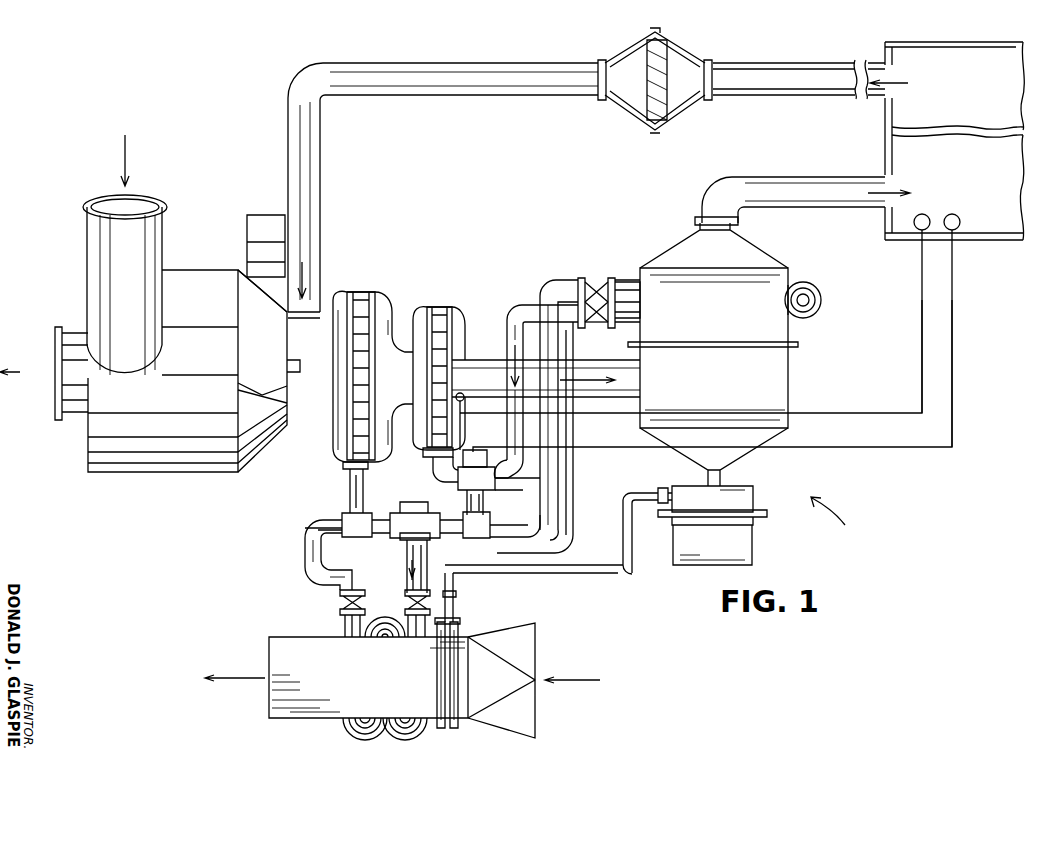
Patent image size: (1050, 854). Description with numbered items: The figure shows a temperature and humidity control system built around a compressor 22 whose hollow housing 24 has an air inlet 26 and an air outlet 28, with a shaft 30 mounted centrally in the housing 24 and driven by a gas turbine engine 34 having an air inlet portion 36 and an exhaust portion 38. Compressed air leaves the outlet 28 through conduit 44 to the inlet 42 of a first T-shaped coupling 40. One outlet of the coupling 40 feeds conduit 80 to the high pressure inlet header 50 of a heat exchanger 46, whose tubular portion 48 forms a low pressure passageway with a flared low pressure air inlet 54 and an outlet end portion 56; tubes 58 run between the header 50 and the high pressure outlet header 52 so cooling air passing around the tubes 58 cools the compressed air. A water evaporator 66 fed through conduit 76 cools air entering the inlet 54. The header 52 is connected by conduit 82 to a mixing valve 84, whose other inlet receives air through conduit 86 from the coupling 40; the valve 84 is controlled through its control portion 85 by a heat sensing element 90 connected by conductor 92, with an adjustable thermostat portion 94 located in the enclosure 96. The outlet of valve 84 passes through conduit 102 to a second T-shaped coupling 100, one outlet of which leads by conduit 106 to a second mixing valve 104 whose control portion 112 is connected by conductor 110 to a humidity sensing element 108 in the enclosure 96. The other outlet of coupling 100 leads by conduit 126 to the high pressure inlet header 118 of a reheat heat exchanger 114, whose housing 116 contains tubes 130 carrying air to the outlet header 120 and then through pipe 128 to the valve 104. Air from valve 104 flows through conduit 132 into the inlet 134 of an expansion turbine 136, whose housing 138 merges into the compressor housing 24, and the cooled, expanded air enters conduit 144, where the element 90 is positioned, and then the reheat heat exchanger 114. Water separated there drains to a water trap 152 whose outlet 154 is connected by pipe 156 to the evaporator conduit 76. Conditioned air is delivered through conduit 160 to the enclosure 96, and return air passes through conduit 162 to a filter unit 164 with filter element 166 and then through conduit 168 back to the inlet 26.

The compressor 22 is at (360, 290).
The hollow housing 24 is at (338, 433).
The air inlet 26 is at (298, 330).
The air outlet 28 is at (340, 466).
The shaft 30 is at (287, 366).
The gas turbine engine 34 is at (170, 460).
The air inlet portion 36 is at (255, 398).
The exhaust portion 38 is at (72, 388).
The first T-shaped coupling member 40 is at (308, 528).
The inlet 42 is at (340, 518).
The pipe or conduit 44 is at (349, 492).
The heat exchanger 46 is at (343, 683).
The tubular or hollow portion 48 is at (333, 722).
The high pressure air inlet or header 50 is at (340, 606).
The high pressure air outlet or header 52 is at (406, 606).
The low pressure air inlet 54 is at (533, 640).
The outlet end portion 56 is at (266, 700).
The conduits or tubes 58 is at (394, 645).
The water evaporator 66 is at (458, 640).
The tube or conduit 76 is at (455, 598).
The conduit 80 is at (303, 556).
The conduit 82 is at (405, 568).
The mixing valve 84 is at (423, 565).
The control portion 85 is at (405, 506).
The conduit 86 is at (395, 540).
The heat sensing element 90 is at (464, 395).
The conductor 92 is at (461, 434).
The adjustable portion of thermostat 94 is at (930, 218).
The enclosure 96 is at (952, 240).
The second T-shaped coupling 100 is at (476, 535).
The conduit or tube 102 is at (450, 535).
The second mixing valve 104 is at (480, 480).
The conduit or tube 106 is at (532, 535).
The humidity sensing element 108 is at (956, 216).
The conductor 110 is at (955, 366).
The control portion 112 is at (548, 490).
The reheat heat exchanger 114 is at (701, 351).
The tubular or hollow housing portion 116 is at (748, 306).
The high pressure inlet or header 118 is at (605, 282).
The high pressure outlet or header 120 is at (605, 325).
The conduit or tubing 126 is at (558, 284).
The tubing or pipe 128 is at (544, 306).
The air tubes or conduits 130 is at (805, 294).
The conduit 132 is at (432, 473).
The inlet 134 is at (425, 453).
The expansion turbine 136 is at (430, 297).
The hollow housing 138 is at (421, 320).
The conduit or tube 144 is at (486, 358).
The water trap 152 is at (745, 547).
The outlet 154 is at (676, 478).
The pipe 156 is at (624, 565).
The tube or conduit 160 is at (752, 170).
The conduit or tube 162 is at (792, 98).
The filter unit 164 is at (674, 54).
The filter element 166 is at (652, 56).
The conduit 168 is at (503, 60).